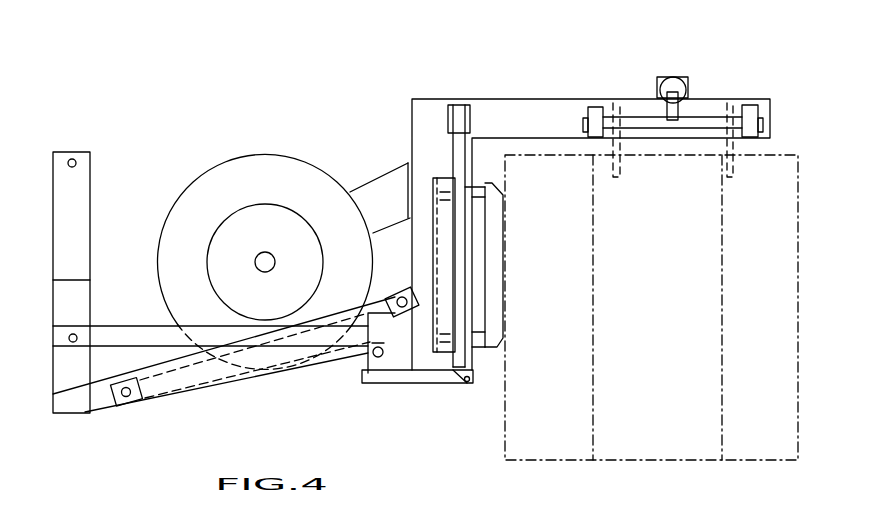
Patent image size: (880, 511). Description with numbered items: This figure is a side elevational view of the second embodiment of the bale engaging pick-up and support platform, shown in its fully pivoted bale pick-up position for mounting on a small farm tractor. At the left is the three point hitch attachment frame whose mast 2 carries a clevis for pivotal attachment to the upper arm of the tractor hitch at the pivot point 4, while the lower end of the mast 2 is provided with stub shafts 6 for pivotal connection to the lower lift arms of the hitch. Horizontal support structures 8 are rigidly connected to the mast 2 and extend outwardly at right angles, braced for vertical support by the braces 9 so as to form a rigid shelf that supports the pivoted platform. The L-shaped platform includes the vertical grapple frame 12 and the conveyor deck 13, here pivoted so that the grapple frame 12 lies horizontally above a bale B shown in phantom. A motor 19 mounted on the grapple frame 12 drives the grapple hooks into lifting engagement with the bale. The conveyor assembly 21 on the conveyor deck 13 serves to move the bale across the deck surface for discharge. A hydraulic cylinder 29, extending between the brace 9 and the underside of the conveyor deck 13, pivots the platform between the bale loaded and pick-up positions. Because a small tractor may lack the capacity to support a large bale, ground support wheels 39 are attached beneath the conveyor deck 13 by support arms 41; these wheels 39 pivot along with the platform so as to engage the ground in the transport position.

The mast frame 2 is at (82, 224).
The pivot point 4 is at (72, 158).
The stub shafts 6 is at (75, 334).
The horizontal support structures 8 is at (140, 338).
The braces 9 is at (283, 380).
The hydraulic cylinder 29 is at (194, 366).
The ground support wheels 39 is at (283, 162).
The support arms 41 is at (380, 186).
The conveyor deck 13 is at (420, 137).
The grapple frame 12 is at (545, 103).
The motor 19 is at (688, 88).
The conveyor assembly 21 is at (517, 265).
The bundle B is at (651, 305).